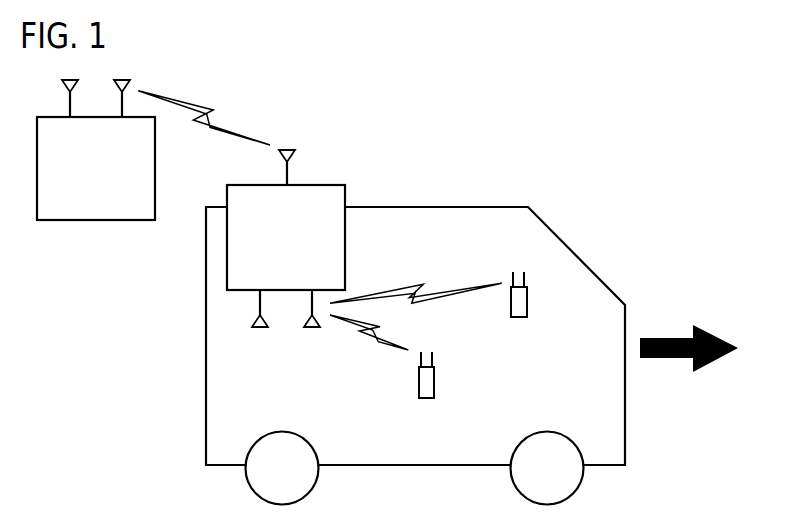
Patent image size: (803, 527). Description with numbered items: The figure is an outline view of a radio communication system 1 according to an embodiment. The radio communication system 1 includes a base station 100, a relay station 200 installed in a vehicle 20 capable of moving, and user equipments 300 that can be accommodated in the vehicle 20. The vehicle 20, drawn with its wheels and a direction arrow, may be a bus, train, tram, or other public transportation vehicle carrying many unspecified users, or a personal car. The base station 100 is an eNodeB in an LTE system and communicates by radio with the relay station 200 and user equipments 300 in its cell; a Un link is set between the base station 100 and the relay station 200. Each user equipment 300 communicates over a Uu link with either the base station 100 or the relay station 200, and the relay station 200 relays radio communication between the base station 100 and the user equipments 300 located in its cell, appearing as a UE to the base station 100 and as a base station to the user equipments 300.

The radio communication system 1 is at (627, 121).
The vehicle 20 is at (495, 207).
The base station 100 is at (97, 220).
The relay station 200 is at (345, 240).
The user equipment 300 is at (518, 317).